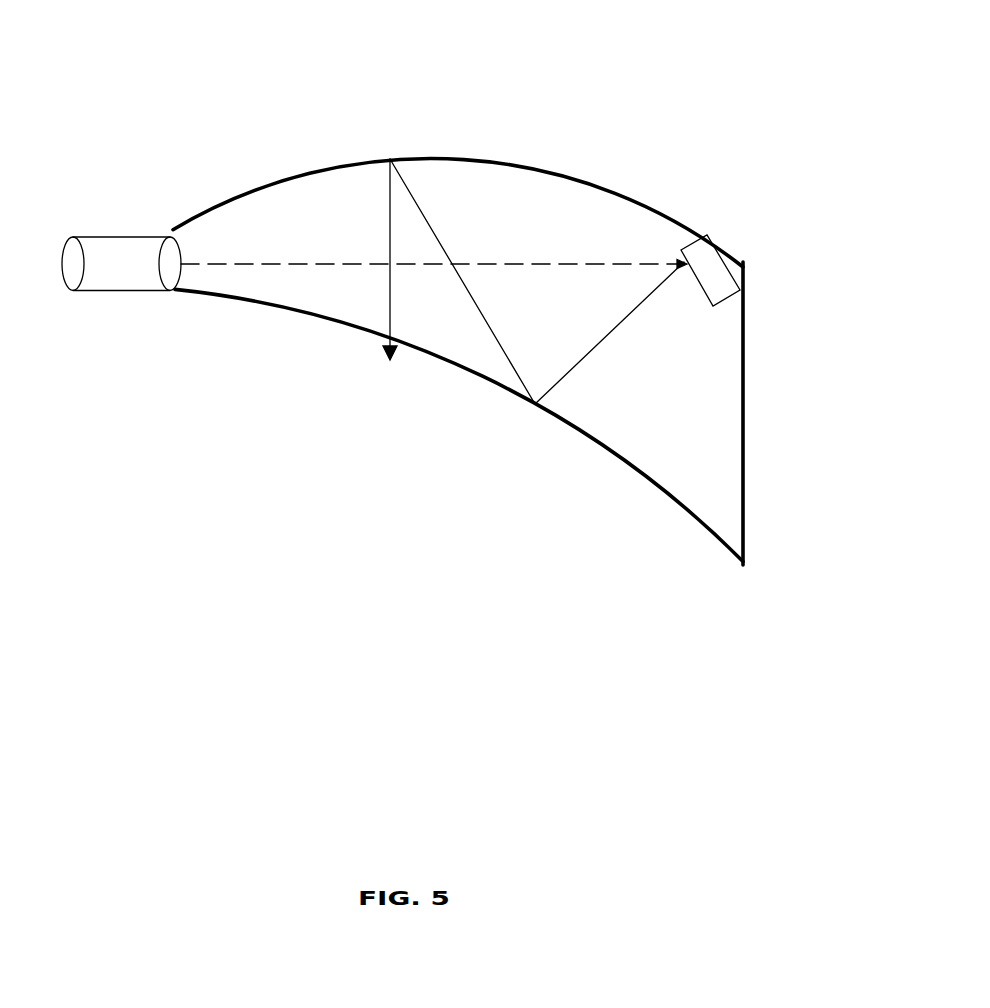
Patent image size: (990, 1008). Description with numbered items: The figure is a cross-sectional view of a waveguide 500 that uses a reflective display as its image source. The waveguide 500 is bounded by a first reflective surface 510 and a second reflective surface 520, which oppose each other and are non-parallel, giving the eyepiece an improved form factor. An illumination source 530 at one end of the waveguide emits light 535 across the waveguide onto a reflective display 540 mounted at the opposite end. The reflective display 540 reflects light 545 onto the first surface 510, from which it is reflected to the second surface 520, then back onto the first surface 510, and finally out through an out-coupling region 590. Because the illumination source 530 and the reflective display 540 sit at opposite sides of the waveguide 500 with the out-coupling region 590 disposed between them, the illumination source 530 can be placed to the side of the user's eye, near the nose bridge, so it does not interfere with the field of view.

The waveguide 500 is at (240, 378).
The first reflective surface 510 is at (291, 312).
The second reflective surface 520 is at (317, 163).
The illumination source 530 is at (127, 290).
The light 535 is at (230, 263).
The reflective display 540 is at (723, 248).
The light 545 is at (625, 327).
The out-coupling region 590 is at (393, 345).